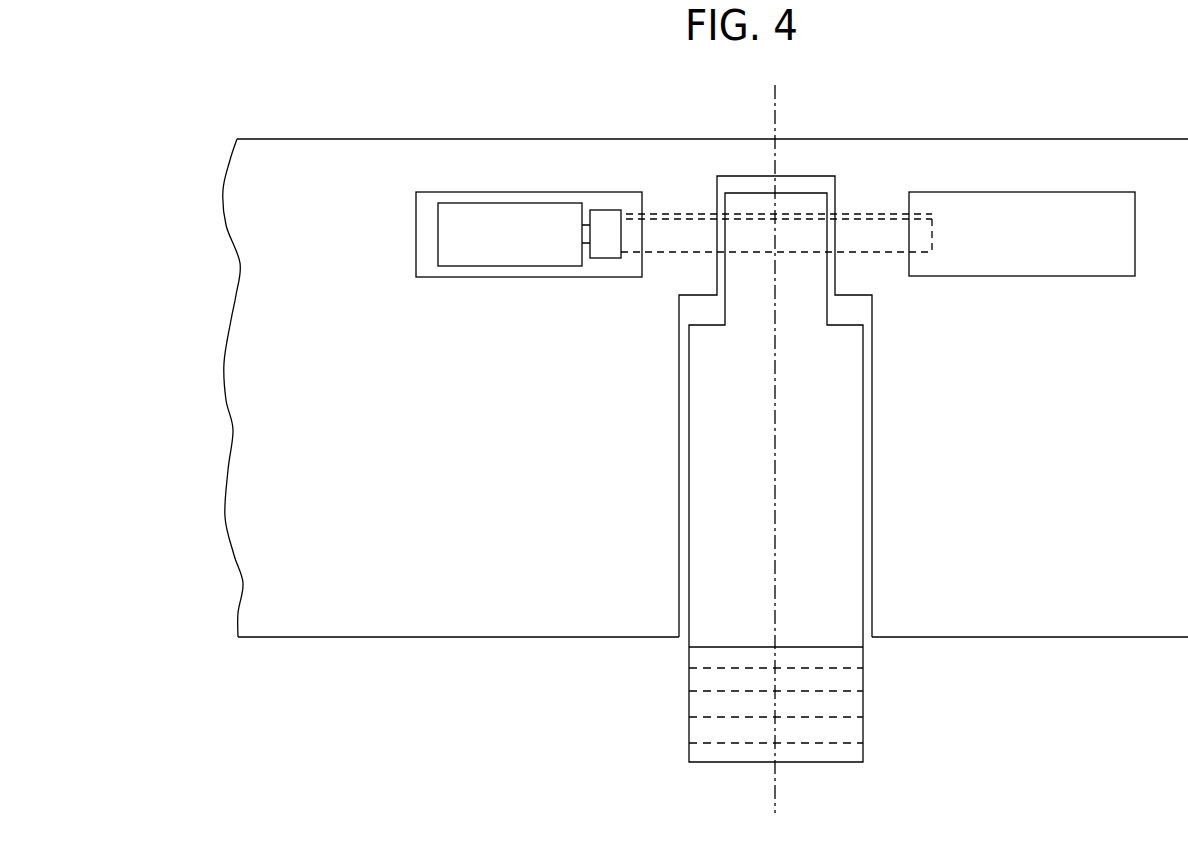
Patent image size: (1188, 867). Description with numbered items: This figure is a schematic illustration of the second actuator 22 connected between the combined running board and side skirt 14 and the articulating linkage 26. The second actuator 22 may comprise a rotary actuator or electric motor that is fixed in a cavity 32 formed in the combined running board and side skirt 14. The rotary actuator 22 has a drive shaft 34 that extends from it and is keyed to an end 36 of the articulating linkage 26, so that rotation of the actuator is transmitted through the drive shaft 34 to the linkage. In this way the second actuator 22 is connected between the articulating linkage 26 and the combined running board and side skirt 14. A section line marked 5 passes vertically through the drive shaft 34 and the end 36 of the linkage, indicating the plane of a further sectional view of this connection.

The combined running board and side skirt 14 is at (270, 438).
The second actuator 22 is at (494, 223).
The cavity 32 is at (589, 265).
The drive shaft 34 is at (671, 228).
The end of the articulating linkage 36 is at (793, 205).
The articulating linkage 26 is at (662, 729).
The section line 5- 5 is at (765, 97).